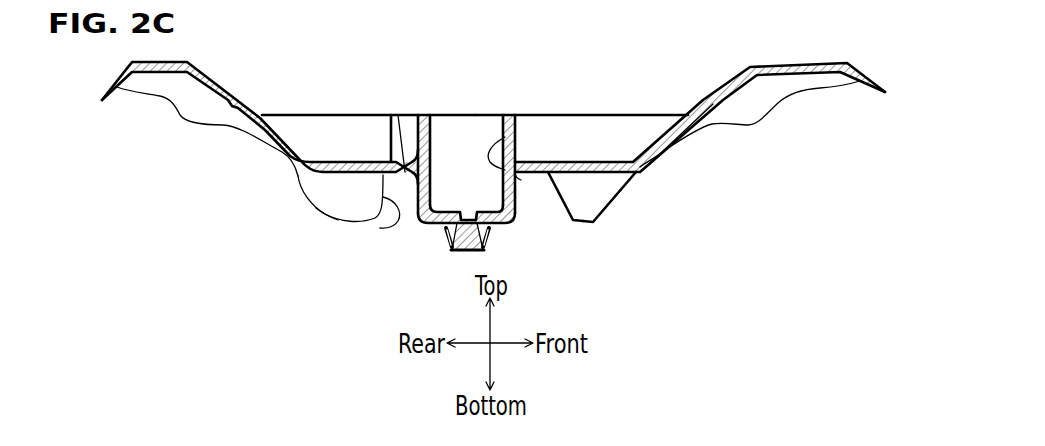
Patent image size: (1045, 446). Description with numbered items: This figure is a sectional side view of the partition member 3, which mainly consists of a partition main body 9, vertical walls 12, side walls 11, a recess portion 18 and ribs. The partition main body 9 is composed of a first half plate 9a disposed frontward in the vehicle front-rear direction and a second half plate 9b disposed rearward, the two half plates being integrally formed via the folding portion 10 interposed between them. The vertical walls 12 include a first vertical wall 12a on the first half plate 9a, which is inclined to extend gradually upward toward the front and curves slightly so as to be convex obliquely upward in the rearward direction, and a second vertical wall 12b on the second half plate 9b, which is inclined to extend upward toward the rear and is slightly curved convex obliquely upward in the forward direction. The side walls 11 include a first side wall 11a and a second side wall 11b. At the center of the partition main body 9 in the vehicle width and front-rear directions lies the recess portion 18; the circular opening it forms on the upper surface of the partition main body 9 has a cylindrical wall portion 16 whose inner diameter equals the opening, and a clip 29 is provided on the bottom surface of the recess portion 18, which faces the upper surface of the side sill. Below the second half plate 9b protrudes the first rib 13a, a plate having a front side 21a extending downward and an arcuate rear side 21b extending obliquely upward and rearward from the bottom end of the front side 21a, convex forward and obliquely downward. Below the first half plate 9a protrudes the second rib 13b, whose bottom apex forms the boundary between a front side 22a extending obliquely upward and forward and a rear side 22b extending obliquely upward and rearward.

The partition member 3 is at (708, 60).
The partition main body 9 is at (517, 55).
The first half plate 9a is at (578, 162).
The second half plate 9b is at (367, 162).
The folding portion 10 is at (405, 172).
The side wall 11 is at (475, 104).
The first side wall 11a is at (607, 115).
The second side wall 11b is at (295, 115).
The vertical wall 12 is at (511, 99).
The first vertical wall 12a is at (806, 63).
The second vertical wall 12b is at (162, 62).
The first rib 13a is at (311, 204).
The second rib 13b is at (638, 196).
The cylindrical wall portion 16 is at (527, 172).
The recess portion 18 is at (515, 172).
The front side 21a is at (389, 220).
The arcuate rear side 21b is at (322, 213).
The front side 22a is at (625, 173).
The rear side 22b is at (553, 172).
The clip 29 is at (467, 252).